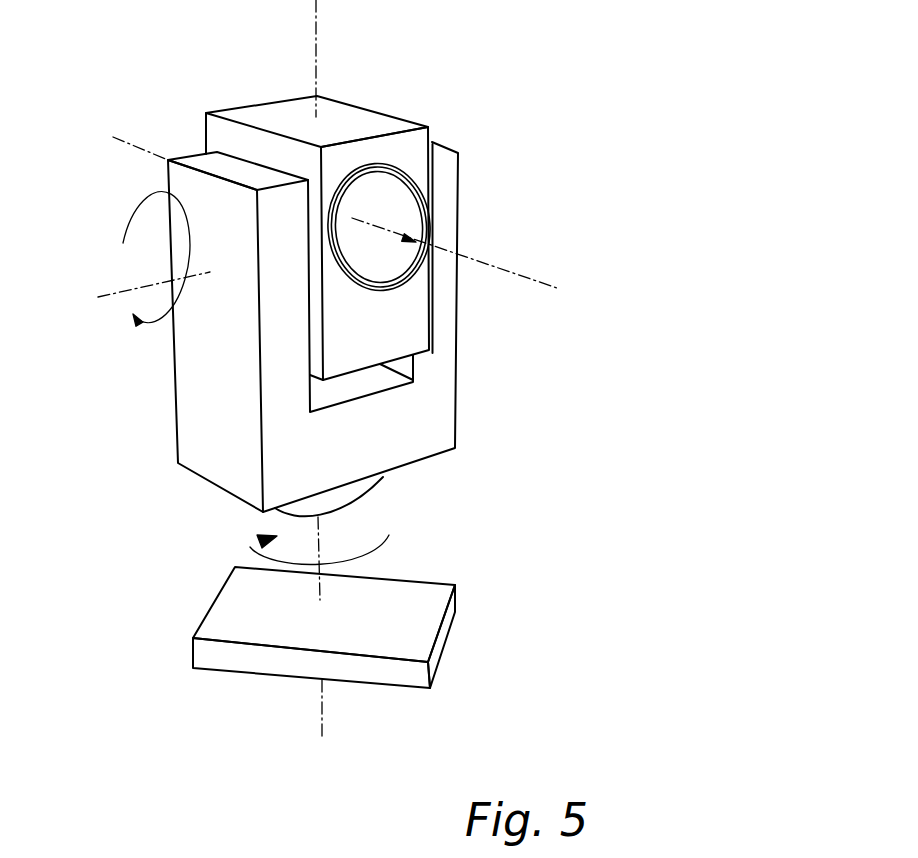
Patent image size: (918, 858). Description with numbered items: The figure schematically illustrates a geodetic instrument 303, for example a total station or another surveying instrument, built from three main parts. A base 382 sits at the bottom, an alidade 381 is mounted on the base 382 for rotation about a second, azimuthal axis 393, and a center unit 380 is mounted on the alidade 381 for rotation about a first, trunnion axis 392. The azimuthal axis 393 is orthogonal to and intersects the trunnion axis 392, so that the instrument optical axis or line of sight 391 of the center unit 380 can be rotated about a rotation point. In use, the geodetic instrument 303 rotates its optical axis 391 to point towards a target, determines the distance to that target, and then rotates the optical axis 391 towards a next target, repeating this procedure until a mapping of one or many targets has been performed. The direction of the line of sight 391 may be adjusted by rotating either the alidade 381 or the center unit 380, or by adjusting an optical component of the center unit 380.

The geodetic instrument 303 is at (134, 559).
The center unit 380 is at (373, 110).
The alidade 381 is at (455, 428).
The base 382 is at (418, 580).
The instrument optical axis 391 is at (523, 273).
The first (trunnion) axis 392 is at (110, 295).
The second (azimuthal) axis 393 is at (323, 708).